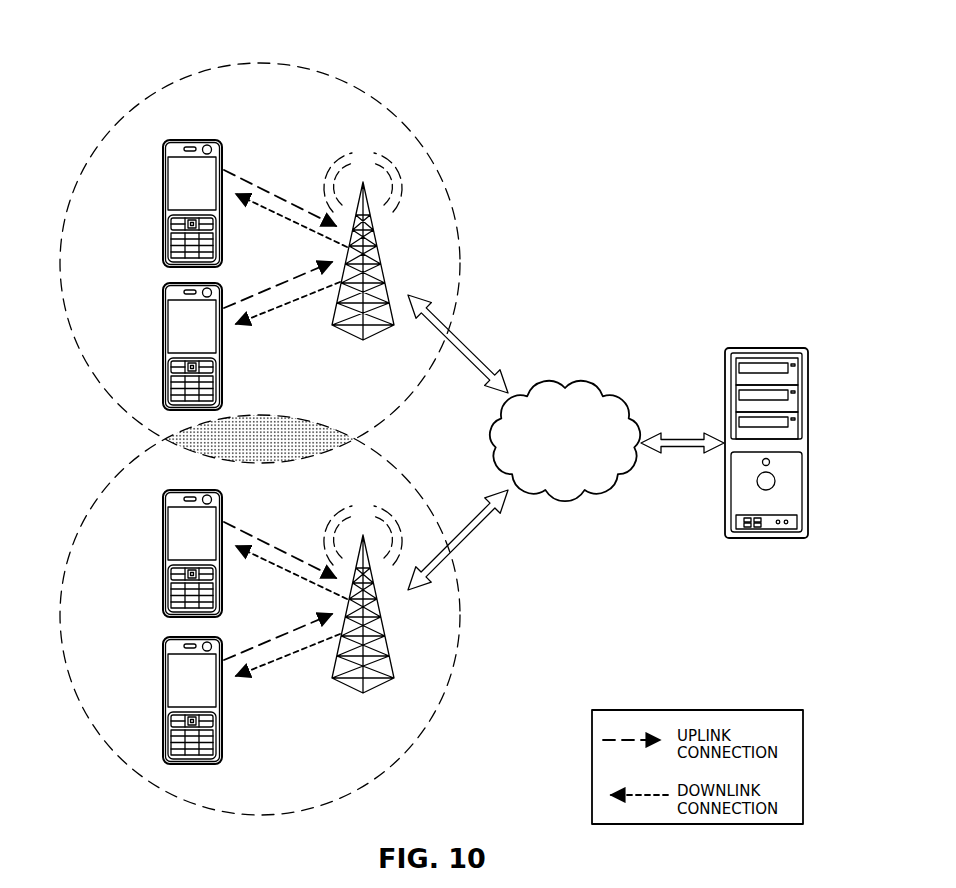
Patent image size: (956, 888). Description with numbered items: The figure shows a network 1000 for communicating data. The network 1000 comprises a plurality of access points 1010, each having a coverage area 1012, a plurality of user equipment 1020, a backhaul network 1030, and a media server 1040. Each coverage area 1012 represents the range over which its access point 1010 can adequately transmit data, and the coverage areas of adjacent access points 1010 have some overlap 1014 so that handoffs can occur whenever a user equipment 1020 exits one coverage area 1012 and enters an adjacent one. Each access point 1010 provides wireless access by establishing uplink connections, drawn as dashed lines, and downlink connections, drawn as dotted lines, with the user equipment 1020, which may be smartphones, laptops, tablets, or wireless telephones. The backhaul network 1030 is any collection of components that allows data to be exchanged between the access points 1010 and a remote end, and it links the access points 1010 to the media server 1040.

The network 1000 is at (625, 66).
The access point 1010 is at (352, 338).
The coverage area 1012 is at (152, 92).
The overlap 1014 is at (275, 463).
The user equipment 1020 is at (163, 205).
The backhaul network 1030 is at (586, 384).
The media server 1040 is at (766, 347).